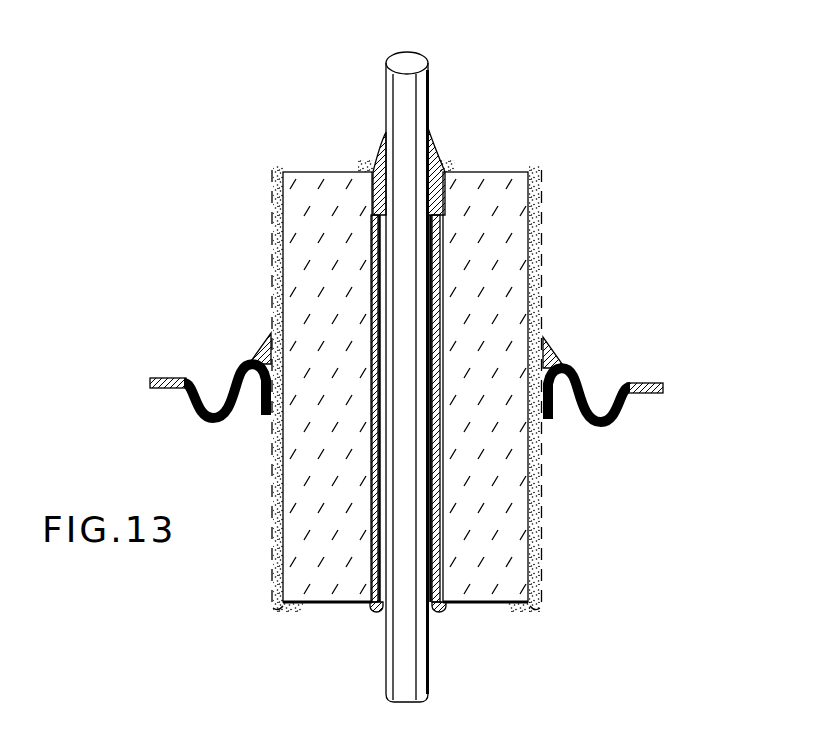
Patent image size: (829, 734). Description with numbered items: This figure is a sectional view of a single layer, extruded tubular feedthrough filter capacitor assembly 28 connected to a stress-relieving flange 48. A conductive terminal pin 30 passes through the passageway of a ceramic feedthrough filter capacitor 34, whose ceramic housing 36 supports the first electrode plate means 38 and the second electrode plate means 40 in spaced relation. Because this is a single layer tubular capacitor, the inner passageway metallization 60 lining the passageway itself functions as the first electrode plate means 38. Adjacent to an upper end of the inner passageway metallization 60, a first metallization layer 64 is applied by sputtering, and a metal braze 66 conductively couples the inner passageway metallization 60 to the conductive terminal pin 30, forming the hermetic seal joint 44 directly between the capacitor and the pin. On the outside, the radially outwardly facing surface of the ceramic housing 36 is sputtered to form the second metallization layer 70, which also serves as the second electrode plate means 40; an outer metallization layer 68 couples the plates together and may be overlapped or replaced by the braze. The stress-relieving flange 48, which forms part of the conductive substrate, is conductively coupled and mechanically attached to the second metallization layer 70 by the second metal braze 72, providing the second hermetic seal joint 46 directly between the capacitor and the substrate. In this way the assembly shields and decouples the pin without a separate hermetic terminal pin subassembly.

The feedthrough filter capacitor assembly 28 is at (510, 102).
The conductive terminal pin 30 is at (413, 53).
The ceramic feedthrough filter capacitor 34 is at (557, 207).
The ceramic housing 36 is at (331, 170).
The first electrode plate means 38 is at (370, 613).
The second electrode plate means 40 is at (548, 514).
The hermetic seal joint 44 is at (372, 148).
The second hermetic seal joint 46 is at (258, 334).
The stress-relieving flange 48 is at (645, 383).
The inner passageway metallization 60 is at (382, 573).
The first metallization layer 64 is at (453, 171).
The metal braze 66 is at (437, 150).
The outer metallization layer 68 is at (538, 577).
The second metallization layer 70 is at (538, 603).
The second metal braze 72 is at (257, 347).